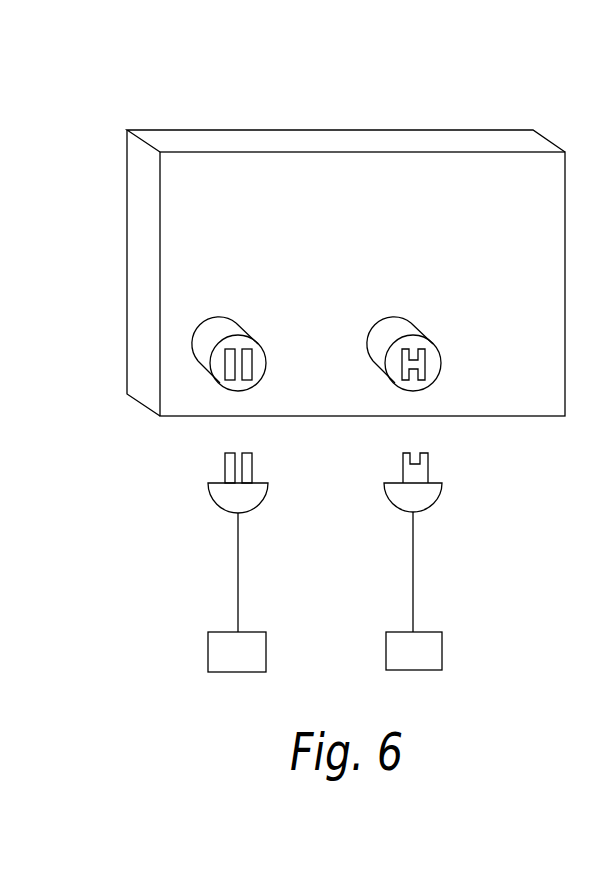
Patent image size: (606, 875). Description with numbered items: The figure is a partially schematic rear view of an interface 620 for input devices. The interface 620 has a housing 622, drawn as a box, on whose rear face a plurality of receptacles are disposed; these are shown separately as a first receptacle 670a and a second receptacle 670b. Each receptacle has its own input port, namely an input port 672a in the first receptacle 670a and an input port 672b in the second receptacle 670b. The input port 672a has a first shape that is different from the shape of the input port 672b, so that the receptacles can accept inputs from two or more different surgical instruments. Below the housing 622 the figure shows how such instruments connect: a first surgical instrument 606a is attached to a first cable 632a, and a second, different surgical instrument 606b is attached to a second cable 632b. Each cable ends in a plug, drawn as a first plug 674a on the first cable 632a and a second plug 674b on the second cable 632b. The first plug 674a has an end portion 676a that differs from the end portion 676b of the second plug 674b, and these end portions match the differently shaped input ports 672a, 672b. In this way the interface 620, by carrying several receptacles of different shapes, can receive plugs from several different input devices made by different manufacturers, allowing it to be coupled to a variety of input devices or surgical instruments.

The interface 620 is at (118, 113).
The housing 622 is at (127, 253).
The first receptacle 670a is at (233, 321).
The second receptacle 670b is at (408, 321).
The input port 672a is at (252, 358).
The input port 672b is at (427, 358).
The first plug 674a is at (262, 500).
The second plug 674b is at (437, 500).
The end portion 676a is at (252, 458).
The end portion 676b is at (428, 458).
The first cable 632a is at (238, 553).
The second cable 632b is at (413, 553).
The first surgical instrument 606a is at (267, 648).
The second surgical instrument 606b is at (443, 648).